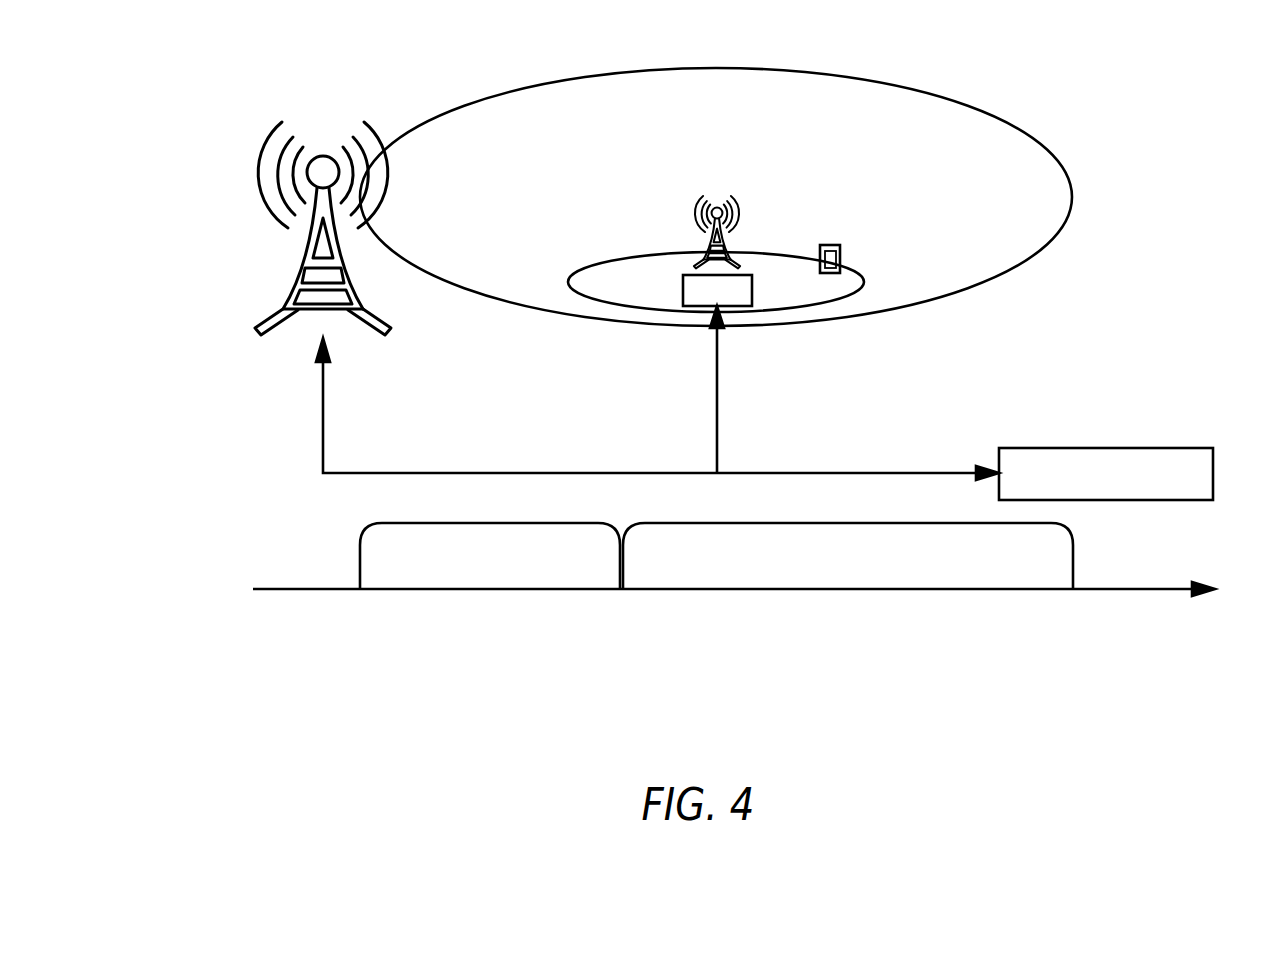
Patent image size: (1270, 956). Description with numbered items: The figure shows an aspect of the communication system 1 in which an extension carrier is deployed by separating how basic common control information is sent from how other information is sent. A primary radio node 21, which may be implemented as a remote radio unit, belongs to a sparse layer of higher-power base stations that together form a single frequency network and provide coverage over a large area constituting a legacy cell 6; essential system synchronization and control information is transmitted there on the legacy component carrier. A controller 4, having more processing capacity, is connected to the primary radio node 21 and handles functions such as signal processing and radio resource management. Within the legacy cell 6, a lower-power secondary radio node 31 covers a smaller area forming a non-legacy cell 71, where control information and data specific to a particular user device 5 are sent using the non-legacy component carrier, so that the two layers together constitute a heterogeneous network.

The communication system 1 is at (1091, 132).
The primary radio node 21 is at (297, 311).
The secondary radio node 31 is at (717, 207).
The controller 4 is at (1167, 448).
The user device 5 is at (832, 243).
The legacy cell 6 is at (938, 300).
The non-legacy cell 71 is at (608, 305).